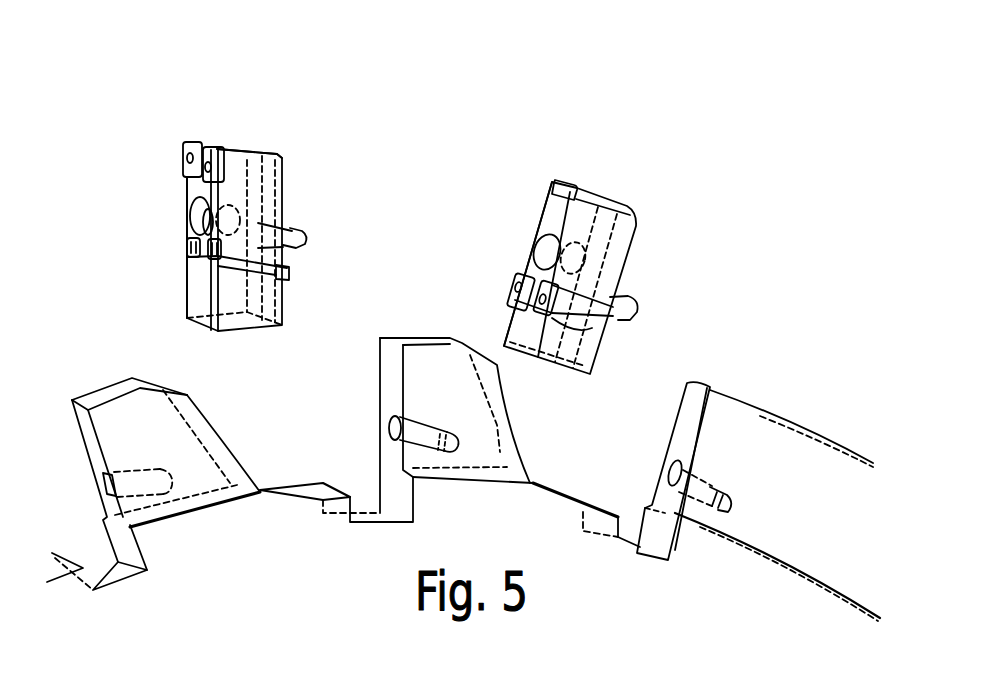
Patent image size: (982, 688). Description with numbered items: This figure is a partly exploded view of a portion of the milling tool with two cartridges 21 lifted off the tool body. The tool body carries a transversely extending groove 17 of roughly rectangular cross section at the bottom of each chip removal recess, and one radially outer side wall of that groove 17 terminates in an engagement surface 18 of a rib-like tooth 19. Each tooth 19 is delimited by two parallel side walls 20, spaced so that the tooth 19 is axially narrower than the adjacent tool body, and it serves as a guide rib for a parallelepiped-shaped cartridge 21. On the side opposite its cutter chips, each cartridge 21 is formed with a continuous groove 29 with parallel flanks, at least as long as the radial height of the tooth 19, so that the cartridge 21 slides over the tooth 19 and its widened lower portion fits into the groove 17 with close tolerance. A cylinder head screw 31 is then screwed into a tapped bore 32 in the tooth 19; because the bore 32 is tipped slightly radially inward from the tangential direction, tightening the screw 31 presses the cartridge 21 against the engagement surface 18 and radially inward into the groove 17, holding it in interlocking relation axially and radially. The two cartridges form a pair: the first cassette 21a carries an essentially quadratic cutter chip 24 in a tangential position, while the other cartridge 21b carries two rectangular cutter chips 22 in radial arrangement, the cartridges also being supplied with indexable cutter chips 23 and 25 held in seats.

The groove 17 is at (380, 515).
The engagement surface 18 is at (392, 375).
The tooth 19 is at (428, 335).
The side wall 20 is at (113, 422).
The cartridge 21 is at (300, 177).
The first cassette 21a is at (553, 220).
The other cartridge 21b is at (195, 188).
The cutter chip 22 is at (218, 147).
The cutter chip 23 is at (185, 258).
The cutter chip 24 is at (571, 181).
The cutter chip 25 is at (518, 276).
The groove 29 is at (263, 153).
The cylinder head screw 31 is at (293, 237).
The tapped bore 32 is at (425, 435).